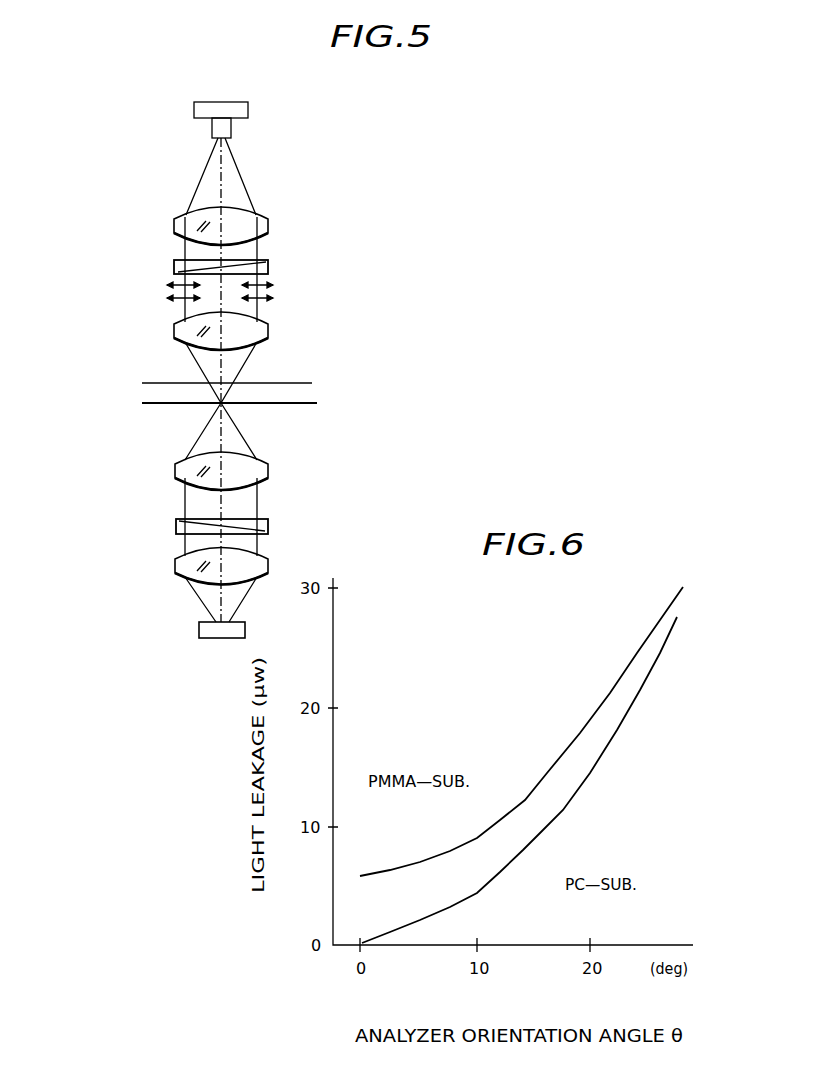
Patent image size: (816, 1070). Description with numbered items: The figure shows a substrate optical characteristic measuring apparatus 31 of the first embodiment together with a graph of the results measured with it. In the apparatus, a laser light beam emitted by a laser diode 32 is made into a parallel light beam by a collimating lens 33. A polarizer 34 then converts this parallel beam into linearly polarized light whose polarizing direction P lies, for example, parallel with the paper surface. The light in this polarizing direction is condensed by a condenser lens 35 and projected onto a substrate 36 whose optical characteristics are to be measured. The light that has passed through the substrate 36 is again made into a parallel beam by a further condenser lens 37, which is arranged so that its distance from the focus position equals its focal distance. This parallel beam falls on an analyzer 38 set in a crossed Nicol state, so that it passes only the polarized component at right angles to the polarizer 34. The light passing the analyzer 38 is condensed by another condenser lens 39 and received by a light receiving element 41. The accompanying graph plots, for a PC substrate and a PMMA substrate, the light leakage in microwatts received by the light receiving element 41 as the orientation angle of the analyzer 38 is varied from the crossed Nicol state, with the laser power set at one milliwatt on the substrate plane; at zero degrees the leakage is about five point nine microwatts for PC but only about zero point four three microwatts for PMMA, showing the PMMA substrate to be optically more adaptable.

The substrate optical characteristic measuring apparatus 31 is at (306, 229).
The laser diode 32 is at (233, 131).
The collimating lens 33 is at (265, 214).
The polarizer 34 is at (269, 266).
The condenser lens 35 is at (269, 331).
The substrate 36 is at (318, 395).
The condenser lens 37 is at (269, 472).
The analyzer 38 is at (177, 519).
The condenser lens 39 is at (177, 566).
The light receiving element 41 is at (199, 628).